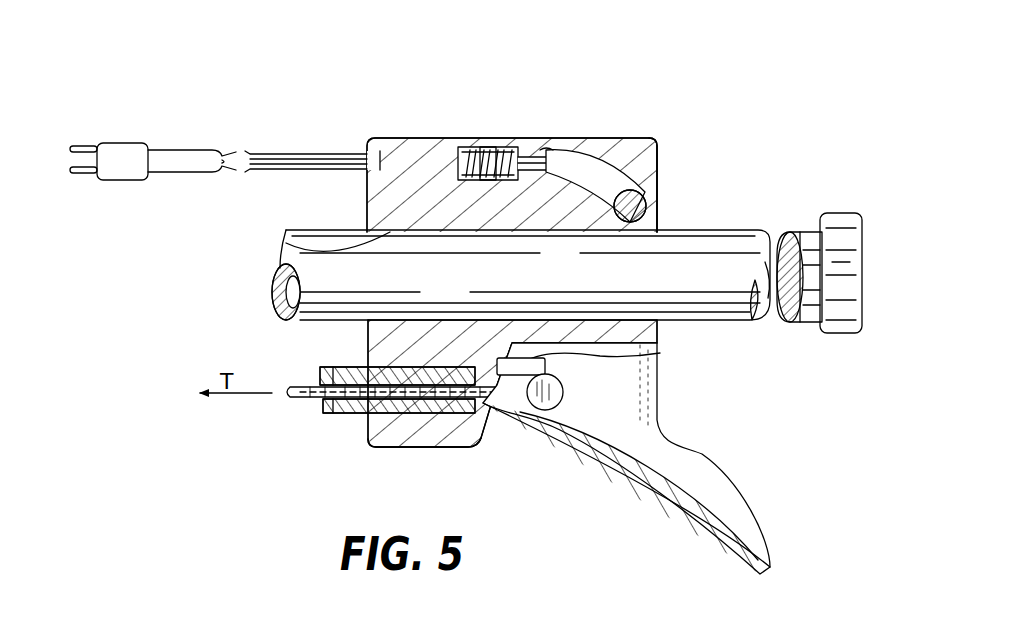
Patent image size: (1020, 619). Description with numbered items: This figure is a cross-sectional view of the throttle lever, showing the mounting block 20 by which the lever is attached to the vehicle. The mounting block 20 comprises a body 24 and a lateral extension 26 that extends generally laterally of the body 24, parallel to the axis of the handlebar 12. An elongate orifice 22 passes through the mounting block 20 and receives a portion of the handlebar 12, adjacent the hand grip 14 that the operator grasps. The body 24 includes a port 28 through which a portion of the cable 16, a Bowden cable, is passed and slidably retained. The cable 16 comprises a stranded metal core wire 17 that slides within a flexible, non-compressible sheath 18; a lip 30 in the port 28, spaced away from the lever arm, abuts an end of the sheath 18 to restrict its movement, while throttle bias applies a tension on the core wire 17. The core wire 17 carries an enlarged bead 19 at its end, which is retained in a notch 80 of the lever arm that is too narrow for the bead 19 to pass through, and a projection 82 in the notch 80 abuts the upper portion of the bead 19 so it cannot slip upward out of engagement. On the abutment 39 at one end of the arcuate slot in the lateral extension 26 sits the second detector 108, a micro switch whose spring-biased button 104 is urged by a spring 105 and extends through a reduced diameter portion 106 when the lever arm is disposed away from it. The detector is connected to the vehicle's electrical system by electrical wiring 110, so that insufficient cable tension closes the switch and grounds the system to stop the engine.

The handlebar 12 is at (300, 277).
The hand grip 14 is at (798, 235).
The cable 16 is at (383, 394).
The core wire 17 is at (298, 399).
The sheath 18 is at (350, 416).
The bead 19 is at (563, 392).
The mounting block 20 is at (497, 281).
The elongate orifice 22 is at (286, 245).
The body 24 is at (388, 206).
The lateral extension 26 is at (657, 146).
The port 28 is at (626, 457).
The lip 30 is at (474, 447).
The abutment 39 is at (547, 146).
The notch 80 is at (660, 353).
The projection 82 is at (595, 385).
The spring-biased button 104 is at (586, 149).
The spring 105 is at (467, 146).
The reduced diameter portion 106 is at (528, 150).
The second detector 108 is at (487, 146).
The electrical wiring 110 is at (177, 156).